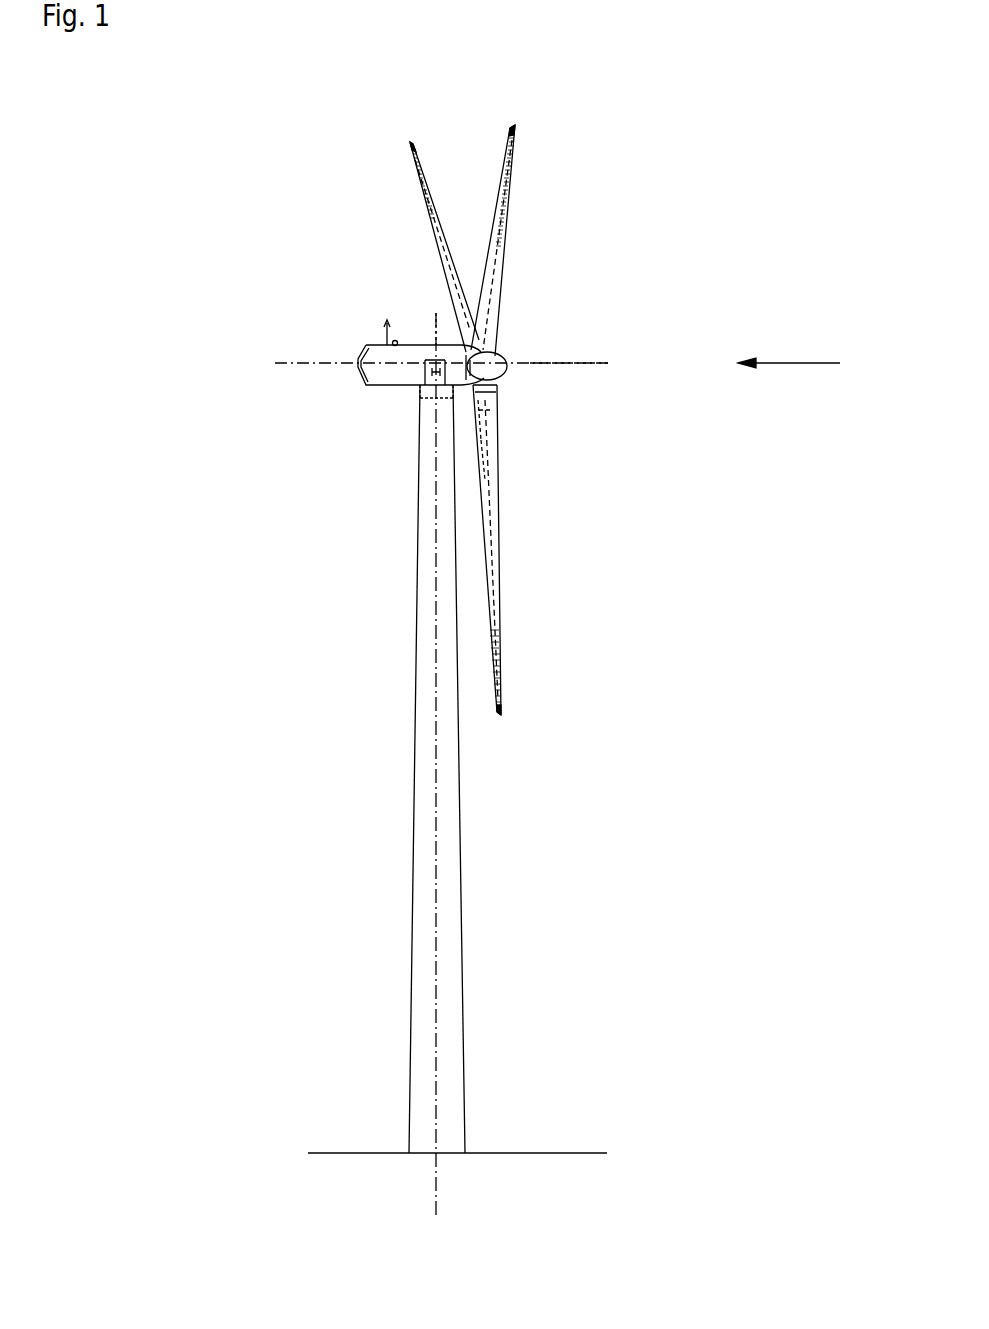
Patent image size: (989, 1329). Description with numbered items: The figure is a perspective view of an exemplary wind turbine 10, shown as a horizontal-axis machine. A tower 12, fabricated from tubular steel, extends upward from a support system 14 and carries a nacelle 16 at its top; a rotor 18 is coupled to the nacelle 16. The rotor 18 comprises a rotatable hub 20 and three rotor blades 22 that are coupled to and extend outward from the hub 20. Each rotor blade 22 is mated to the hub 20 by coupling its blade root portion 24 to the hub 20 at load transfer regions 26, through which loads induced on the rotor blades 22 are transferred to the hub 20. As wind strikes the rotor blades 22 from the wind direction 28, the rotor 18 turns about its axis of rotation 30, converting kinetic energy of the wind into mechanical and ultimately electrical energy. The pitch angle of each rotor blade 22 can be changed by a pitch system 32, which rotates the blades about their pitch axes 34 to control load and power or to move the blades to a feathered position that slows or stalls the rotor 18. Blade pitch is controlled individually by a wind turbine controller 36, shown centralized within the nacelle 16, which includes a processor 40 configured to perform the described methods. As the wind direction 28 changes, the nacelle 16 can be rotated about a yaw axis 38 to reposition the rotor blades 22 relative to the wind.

The wind turbine 10 is at (195, 153).
The tower 12 is at (411, 924).
The support system 14 is at (367, 1152).
The nacelle 16 is at (388, 388).
The rotor 18 is at (513, 267).
The rotatable hub 20 is at (501, 353).
The rotor blade 22 is at (425, 210).
The blade root portion 24 is at (498, 468).
The load transfer region 26 is at (494, 385).
The wind direction 28 is at (808, 362).
The axis of rotation 30 is at (575, 365).
The pitch system 32 is at (480, 412).
The pitch axis 34 is at (405, 144).
The wind turbine controller 36 is at (422, 398).
The yaw axis 38 is at (438, 810).
The processor 40 is at (434, 302).